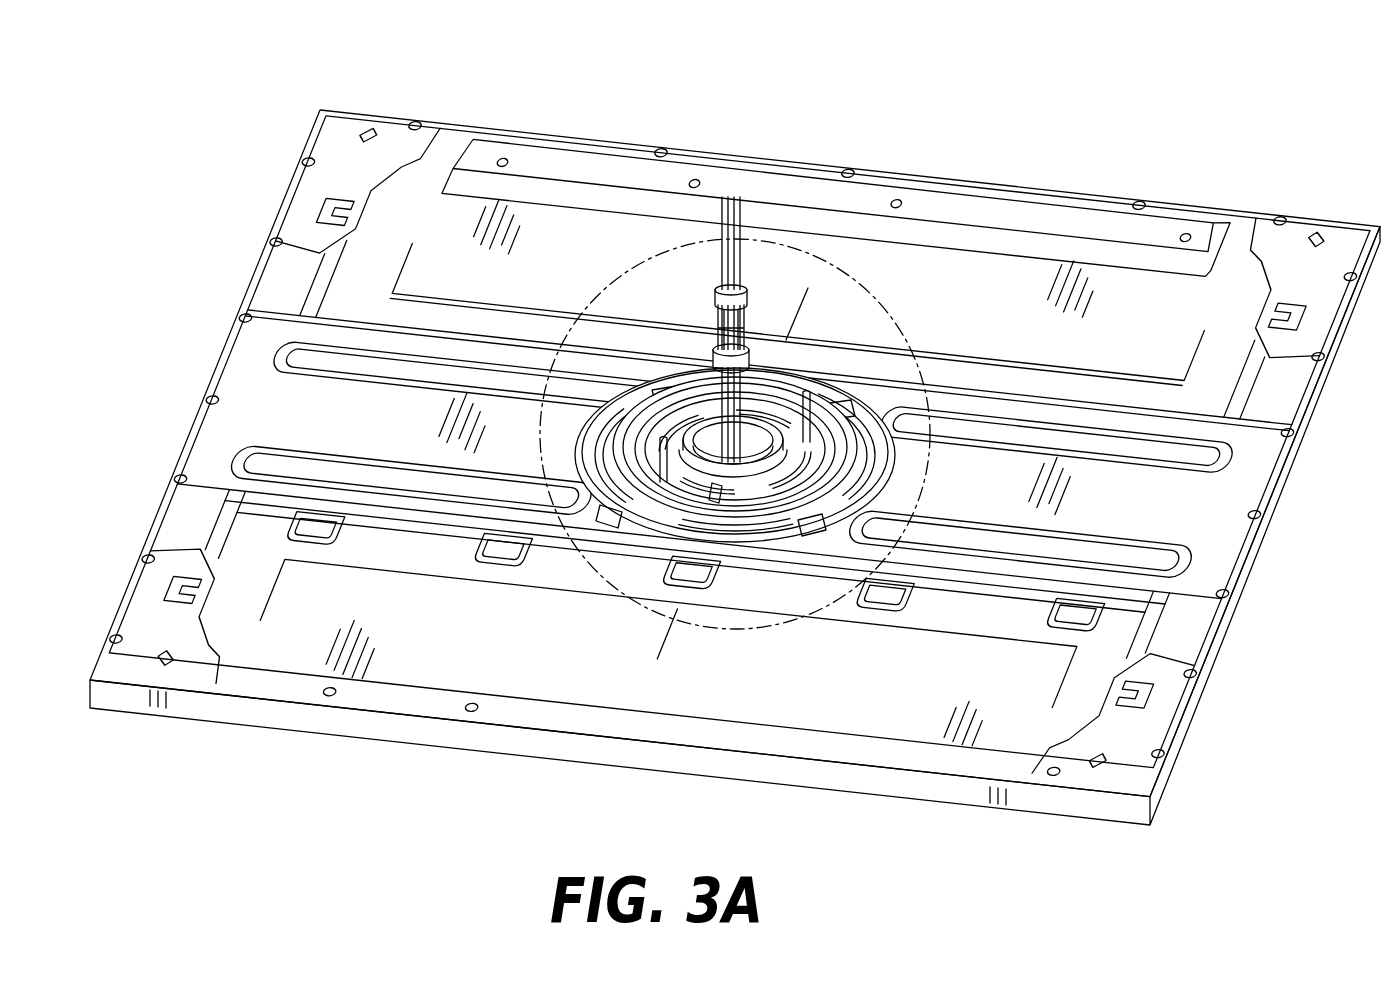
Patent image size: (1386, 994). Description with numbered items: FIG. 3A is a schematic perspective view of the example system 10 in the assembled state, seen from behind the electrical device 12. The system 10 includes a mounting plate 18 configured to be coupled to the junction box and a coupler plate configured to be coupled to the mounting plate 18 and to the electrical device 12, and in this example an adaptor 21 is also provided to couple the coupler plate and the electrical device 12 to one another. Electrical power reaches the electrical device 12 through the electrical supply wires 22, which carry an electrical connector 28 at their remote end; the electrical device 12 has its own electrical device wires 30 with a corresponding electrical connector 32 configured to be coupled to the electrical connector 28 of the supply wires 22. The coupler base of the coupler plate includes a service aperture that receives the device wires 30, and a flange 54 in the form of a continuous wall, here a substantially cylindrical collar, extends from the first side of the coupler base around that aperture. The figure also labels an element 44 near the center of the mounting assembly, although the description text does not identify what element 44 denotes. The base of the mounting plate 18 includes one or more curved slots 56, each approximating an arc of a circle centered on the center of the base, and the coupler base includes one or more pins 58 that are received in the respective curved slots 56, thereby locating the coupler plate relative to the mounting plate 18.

The system 10 is at (1048, 90).
The electrical device 12 is at (945, 790).
The mounting plate 18 is at (827, 390).
The adaptor 21 is at (1011, 480).
The electrical supply wires 22 is at (905, 237).
The electrical connector 28 is at (715, 290).
The electrical device wires 30 is at (665, 398).
The electrical connector 32 is at (717, 360).
The hub flange 44 is at (603, 419).
The flange 54 is at (768, 425).
The curved slots 56 is at (663, 396).
The pins 58 is at (570, 447).